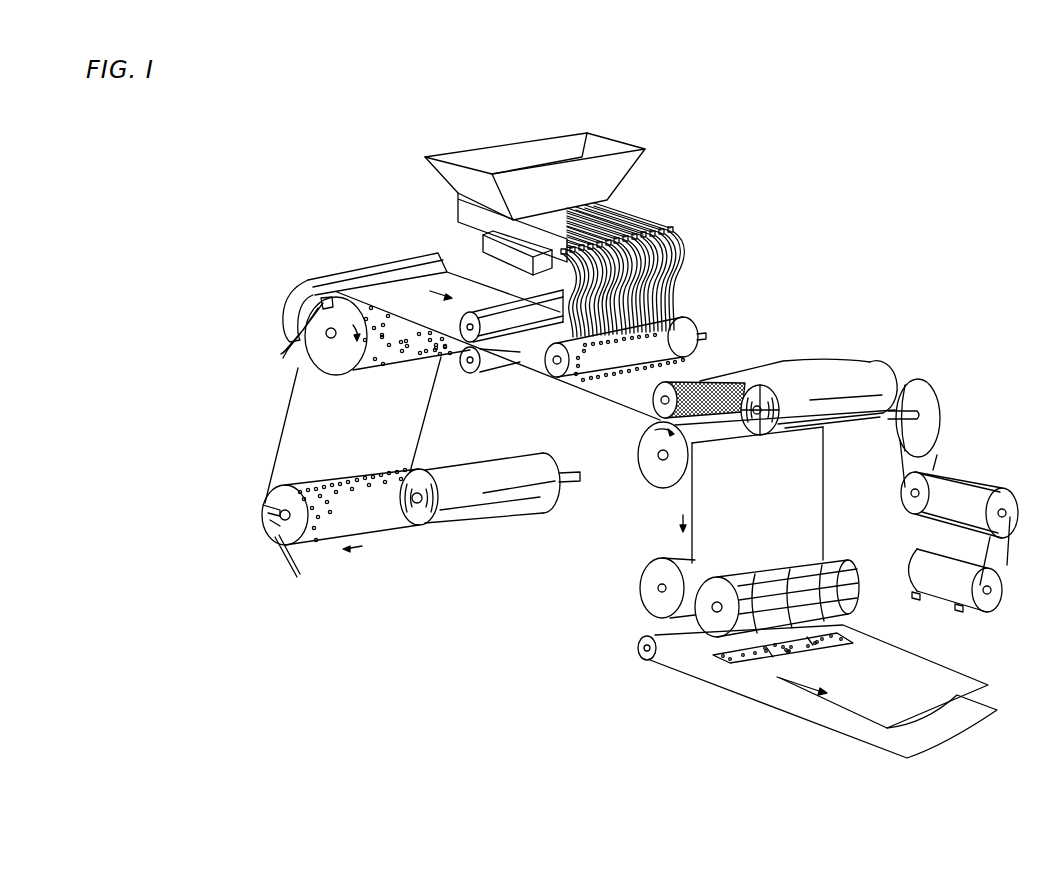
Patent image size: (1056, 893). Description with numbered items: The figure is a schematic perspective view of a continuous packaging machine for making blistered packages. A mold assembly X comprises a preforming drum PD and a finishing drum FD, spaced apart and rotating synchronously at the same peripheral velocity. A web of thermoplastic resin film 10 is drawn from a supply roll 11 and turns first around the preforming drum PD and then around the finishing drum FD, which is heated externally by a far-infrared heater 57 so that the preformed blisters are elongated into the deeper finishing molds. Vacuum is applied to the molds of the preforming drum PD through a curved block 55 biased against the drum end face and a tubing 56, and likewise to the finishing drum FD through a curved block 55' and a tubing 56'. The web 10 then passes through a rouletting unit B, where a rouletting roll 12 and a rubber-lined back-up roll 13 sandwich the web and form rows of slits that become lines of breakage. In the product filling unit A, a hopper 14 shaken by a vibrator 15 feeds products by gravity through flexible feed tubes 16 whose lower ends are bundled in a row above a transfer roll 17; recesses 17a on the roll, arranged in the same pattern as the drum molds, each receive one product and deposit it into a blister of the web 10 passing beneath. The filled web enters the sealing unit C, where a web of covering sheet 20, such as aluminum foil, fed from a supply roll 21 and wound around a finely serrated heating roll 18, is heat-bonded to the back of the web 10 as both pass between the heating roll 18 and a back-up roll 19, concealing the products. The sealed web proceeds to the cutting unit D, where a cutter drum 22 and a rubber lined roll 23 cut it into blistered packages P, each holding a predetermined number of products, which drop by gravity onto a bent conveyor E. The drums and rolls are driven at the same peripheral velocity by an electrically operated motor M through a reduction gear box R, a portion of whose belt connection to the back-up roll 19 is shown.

The hopper 14 is at (538, 148).
The vibrator 15 is at (483, 236).
The product filling unit A is at (662, 212).
The flexible feed tubes 16 is at (680, 270).
The external heater 57 is at (370, 268).
The finishing drum FD is at (328, 363).
The curved block 55' is at (277, 284).
The tubing 56' is at (272, 330).
The mold assembly X is at (264, 423).
The web of thermoplastic resin film 10 is at (272, 458).
The rouletting unit B is at (513, 373).
The preforming drum PD is at (380, 523).
The curved block 55 is at (249, 522).
The tubing 56 is at (261, 561).
The supply roll 11 is at (422, 507).
The rouletting roll 12 is at (523, 325).
The back-up roll 13 is at (473, 370).
The transfer roll 17 is at (687, 327).
The recesses 17a is at (583, 355).
The heating roll 18 is at (700, 380).
The supply roll 21 is at (870, 373).
The sealing unit C is at (816, 355).
The reduction gear box R is at (968, 473).
The electrically operated motor M is at (972, 607).
The back-up roll 19 is at (655, 478).
The web of covering sheet 20 is at (822, 505).
The rubber lined roll 23 is at (648, 607).
The cutting unit D is at (649, 620).
The cutter drum 22 is at (853, 600).
The bent conveyor E is at (827, 730).
The blistered packages P is at (755, 662).